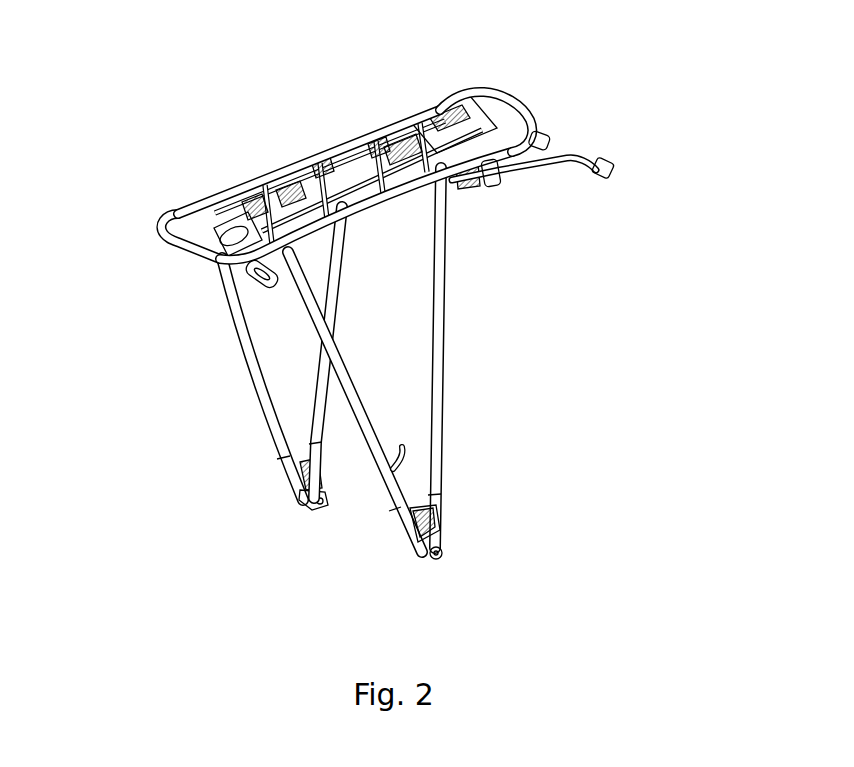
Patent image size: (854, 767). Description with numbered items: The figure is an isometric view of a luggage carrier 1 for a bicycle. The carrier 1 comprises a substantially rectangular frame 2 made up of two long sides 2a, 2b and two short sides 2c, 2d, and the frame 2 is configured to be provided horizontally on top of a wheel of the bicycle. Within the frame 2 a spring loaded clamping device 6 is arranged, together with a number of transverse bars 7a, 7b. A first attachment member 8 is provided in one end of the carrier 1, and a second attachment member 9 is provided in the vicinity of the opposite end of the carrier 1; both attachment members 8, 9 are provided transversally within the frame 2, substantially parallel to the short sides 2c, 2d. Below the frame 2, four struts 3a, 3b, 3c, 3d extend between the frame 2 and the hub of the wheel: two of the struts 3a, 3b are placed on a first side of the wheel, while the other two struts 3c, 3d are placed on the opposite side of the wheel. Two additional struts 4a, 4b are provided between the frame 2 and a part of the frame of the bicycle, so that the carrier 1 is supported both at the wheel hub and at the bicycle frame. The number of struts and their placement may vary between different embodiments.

The luggage carrier 1 is at (356, 290).
The frame 2 is at (317, 147).
The long side 2a is at (248, 196).
The long side 2b is at (430, 188).
The short side 2c is at (486, 88).
The short side 2d is at (188, 247).
The strut 3a is at (393, 490).
The strut 3b is at (447, 391).
The strut 3c is at (238, 334).
The strut 3d is at (340, 317).
The additional strut 4a is at (561, 170).
The additional strut 4b is at (541, 135).
The spring loaded clamping device 6 is at (389, 136).
The transverse bar 7a is at (290, 184).
The transverse bar 7b is at (333, 163).
The first attachment member 8 is at (222, 210).
The second attachment member 9 is at (376, 146).